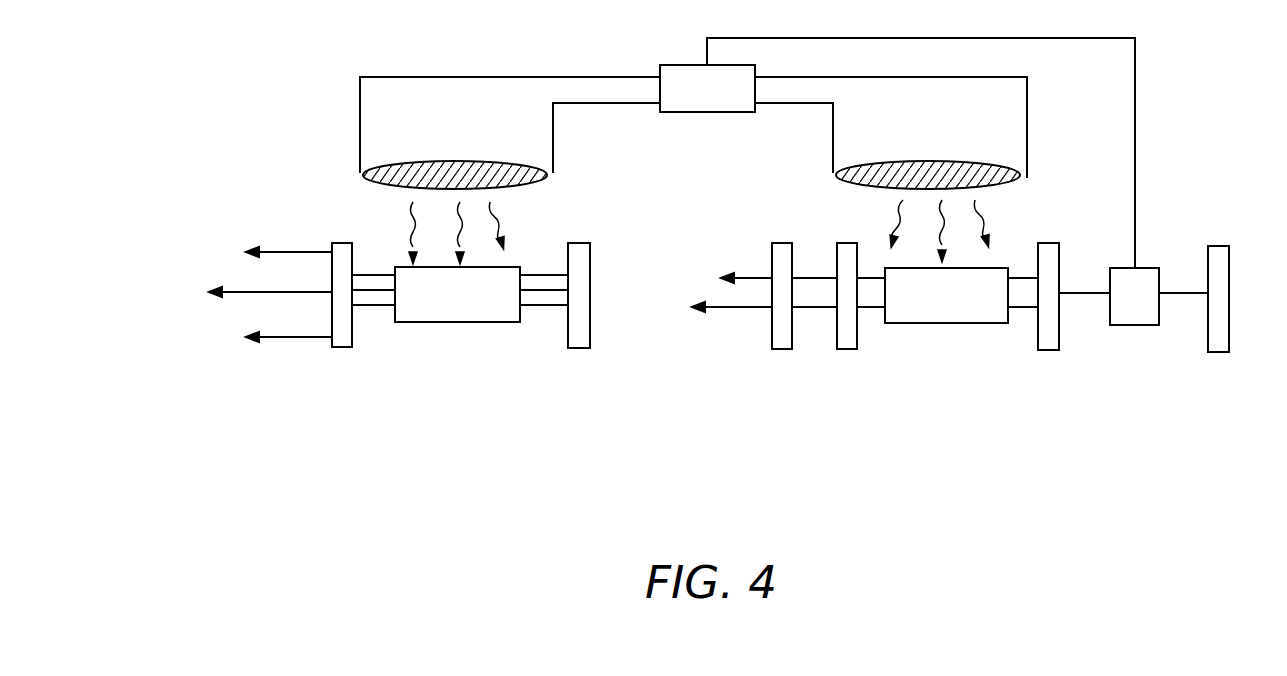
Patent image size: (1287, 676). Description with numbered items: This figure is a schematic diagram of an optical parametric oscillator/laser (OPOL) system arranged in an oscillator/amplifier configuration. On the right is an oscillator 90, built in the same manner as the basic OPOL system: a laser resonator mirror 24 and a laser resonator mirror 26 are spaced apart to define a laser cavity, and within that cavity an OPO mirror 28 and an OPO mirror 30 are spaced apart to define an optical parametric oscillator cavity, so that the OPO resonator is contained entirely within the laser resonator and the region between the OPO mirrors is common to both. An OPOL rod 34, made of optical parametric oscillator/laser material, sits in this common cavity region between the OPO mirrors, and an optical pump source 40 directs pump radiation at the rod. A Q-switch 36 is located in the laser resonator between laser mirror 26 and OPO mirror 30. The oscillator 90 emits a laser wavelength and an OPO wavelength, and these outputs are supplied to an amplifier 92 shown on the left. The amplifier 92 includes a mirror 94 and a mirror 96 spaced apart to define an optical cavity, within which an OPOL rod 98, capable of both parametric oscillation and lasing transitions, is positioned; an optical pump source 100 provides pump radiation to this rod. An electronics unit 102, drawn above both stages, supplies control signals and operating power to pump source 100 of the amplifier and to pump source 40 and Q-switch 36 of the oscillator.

The laser resonator mirror 24 is at (782, 243).
The laser resonator mirror 26 is at (1222, 246).
The OPO mirror 28 is at (848, 243).
The OPO mirror 30 is at (1047, 243).
The OPOL rod 34 is at (960, 323).
The Q-switch 36 is at (1140, 325).
The optical pump source 40 is at (862, 165).
The oscillator 90 is at (750, 364).
The amplifier 92 is at (338, 403).
The mirror 94 is at (340, 243).
The mirror 96 is at (582, 243).
The OPOL rod 98 is at (480, 323).
The optical pump source 100 is at (383, 167).
The electronics unit 102 is at (707, 113).